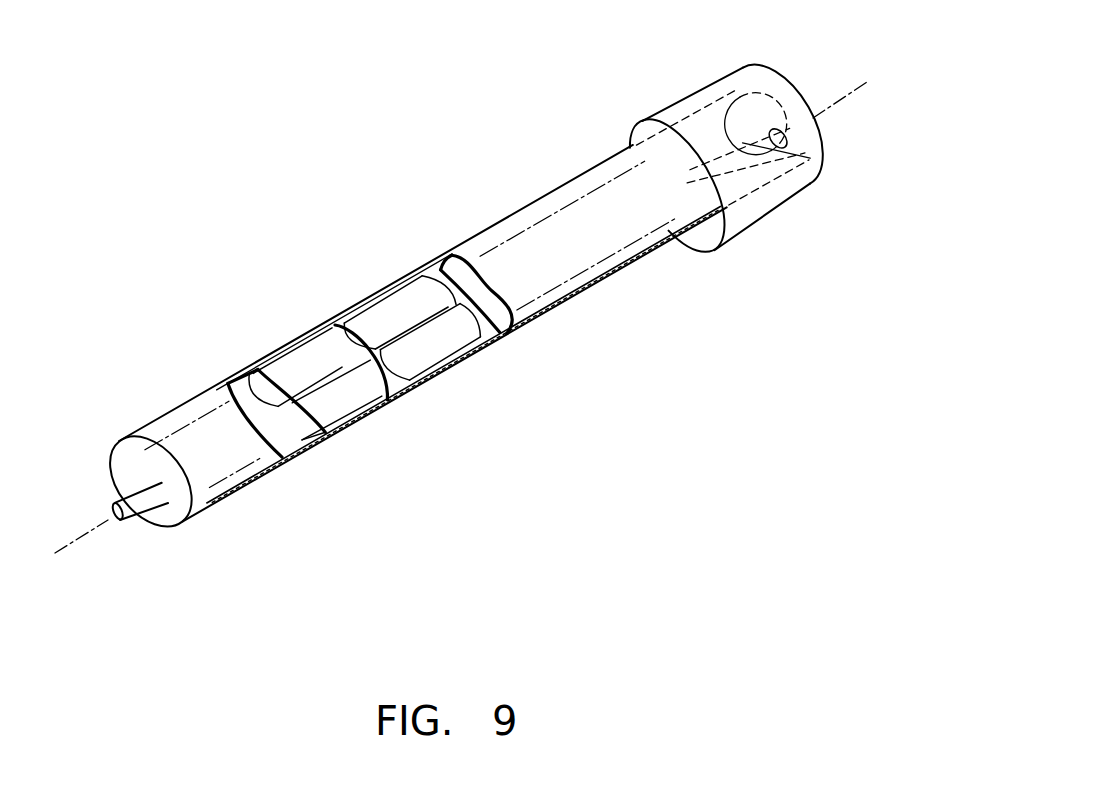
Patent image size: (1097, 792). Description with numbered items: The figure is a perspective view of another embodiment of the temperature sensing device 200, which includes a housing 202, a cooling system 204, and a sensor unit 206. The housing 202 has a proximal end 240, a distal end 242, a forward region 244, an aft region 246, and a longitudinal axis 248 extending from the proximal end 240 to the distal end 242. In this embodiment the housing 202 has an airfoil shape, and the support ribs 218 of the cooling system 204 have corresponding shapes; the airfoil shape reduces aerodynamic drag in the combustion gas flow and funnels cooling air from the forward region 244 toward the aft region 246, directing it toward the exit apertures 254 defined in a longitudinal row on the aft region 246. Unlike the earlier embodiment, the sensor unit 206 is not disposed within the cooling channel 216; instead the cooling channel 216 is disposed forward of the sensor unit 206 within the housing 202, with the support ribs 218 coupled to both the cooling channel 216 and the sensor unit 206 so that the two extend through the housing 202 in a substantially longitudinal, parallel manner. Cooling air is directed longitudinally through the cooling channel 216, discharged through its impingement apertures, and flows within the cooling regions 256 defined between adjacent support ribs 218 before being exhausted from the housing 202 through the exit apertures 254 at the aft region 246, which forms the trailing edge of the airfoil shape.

The temperature sensing device 200 is at (343, 125).
The housing 202 is at (648, 108).
The cooling system 204 is at (312, 366).
The sensor unit 206 is at (277, 425).
The cooling channel 216 is at (415, 305).
The support ribs 218 is at (397, 382).
The proximal end 240 is at (832, 140).
The distal end 242 is at (112, 462).
The forward region 244 is at (203, 390).
The aft region 246 is at (567, 310).
The longitudinal axis 248 is at (72, 548).
The exit apertures 254 is at (248, 480).
The cooling regions 256 is at (357, 398).